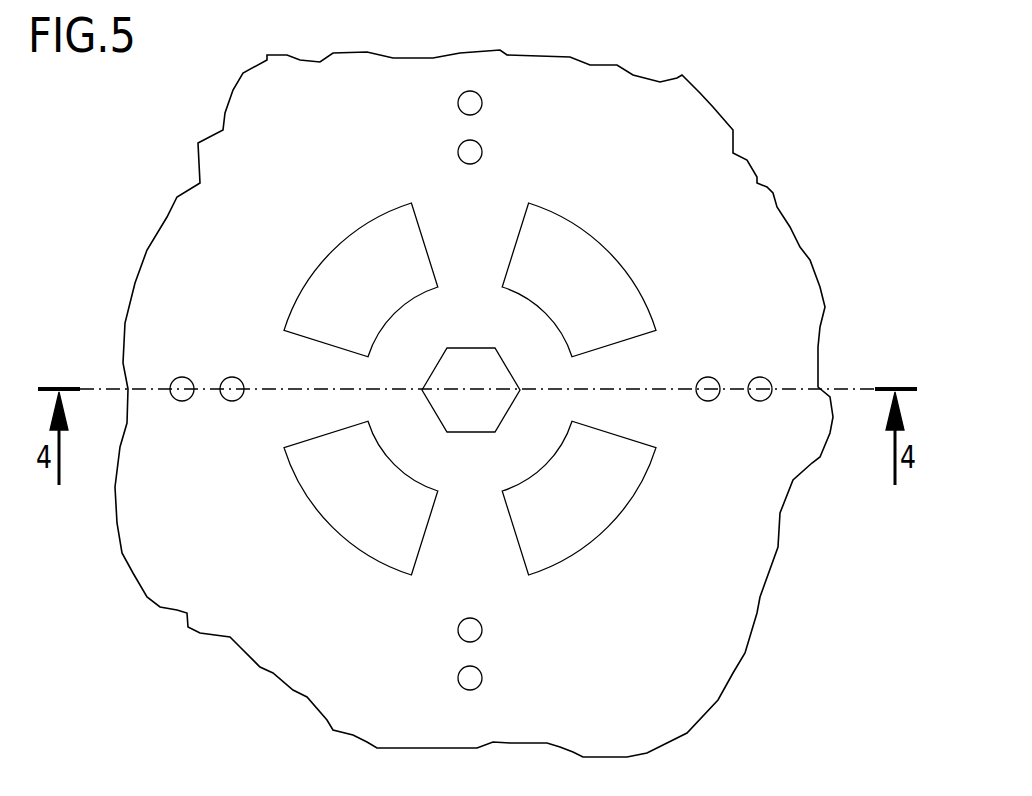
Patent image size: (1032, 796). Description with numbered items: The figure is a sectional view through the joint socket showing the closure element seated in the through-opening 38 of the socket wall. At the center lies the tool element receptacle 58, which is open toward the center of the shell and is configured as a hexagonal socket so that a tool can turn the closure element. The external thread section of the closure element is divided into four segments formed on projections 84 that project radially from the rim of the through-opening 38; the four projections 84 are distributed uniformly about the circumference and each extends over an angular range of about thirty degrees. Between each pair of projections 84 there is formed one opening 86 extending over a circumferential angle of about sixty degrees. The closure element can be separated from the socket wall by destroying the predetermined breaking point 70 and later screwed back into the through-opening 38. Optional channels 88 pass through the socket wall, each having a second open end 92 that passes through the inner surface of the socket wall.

The through-opening 38 is at (346, 245).
The tool element receptacle 58 is at (487, 406).
The predetermined breaking point 70 is at (477, 275).
The projections 84 is at (487, 228).
The opening 86 is at (610, 485).
The channel 88 is at (466, 680).
The second open end 92 is at (757, 386).